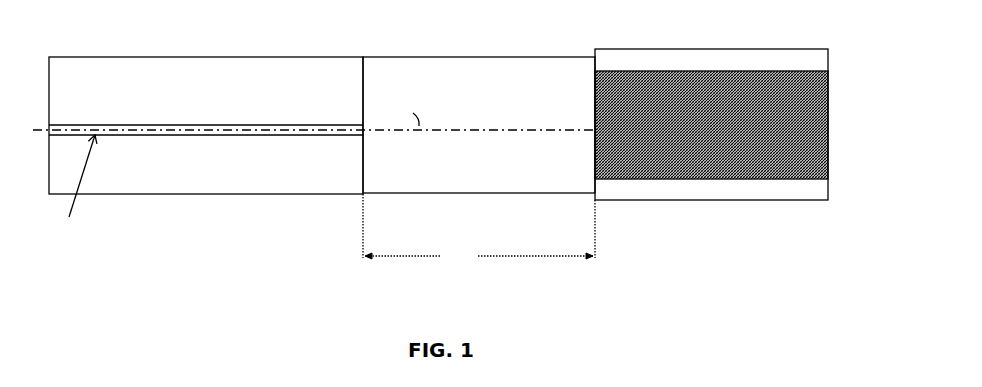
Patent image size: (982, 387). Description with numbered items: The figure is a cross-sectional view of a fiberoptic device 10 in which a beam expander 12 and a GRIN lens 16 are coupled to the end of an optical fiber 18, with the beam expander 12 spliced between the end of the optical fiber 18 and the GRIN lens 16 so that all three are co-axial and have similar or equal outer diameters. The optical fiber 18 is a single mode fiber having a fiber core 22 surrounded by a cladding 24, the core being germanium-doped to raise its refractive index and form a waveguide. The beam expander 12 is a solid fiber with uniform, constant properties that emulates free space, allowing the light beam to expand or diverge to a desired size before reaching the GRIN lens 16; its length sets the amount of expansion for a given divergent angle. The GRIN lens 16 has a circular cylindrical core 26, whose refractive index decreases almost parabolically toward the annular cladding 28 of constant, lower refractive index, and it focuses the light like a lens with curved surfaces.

The fiberoptic device 10 is at (823, 18).
The beam expander 12 is at (509, 62).
The GRIN lens 16 is at (728, 42).
The optical fiber 18 is at (268, 72).
The fiber core 22 is at (195, 138).
The cladding 24 is at (280, 165).
The core 26 is at (736, 154).
The cladding 28 is at (793, 189).